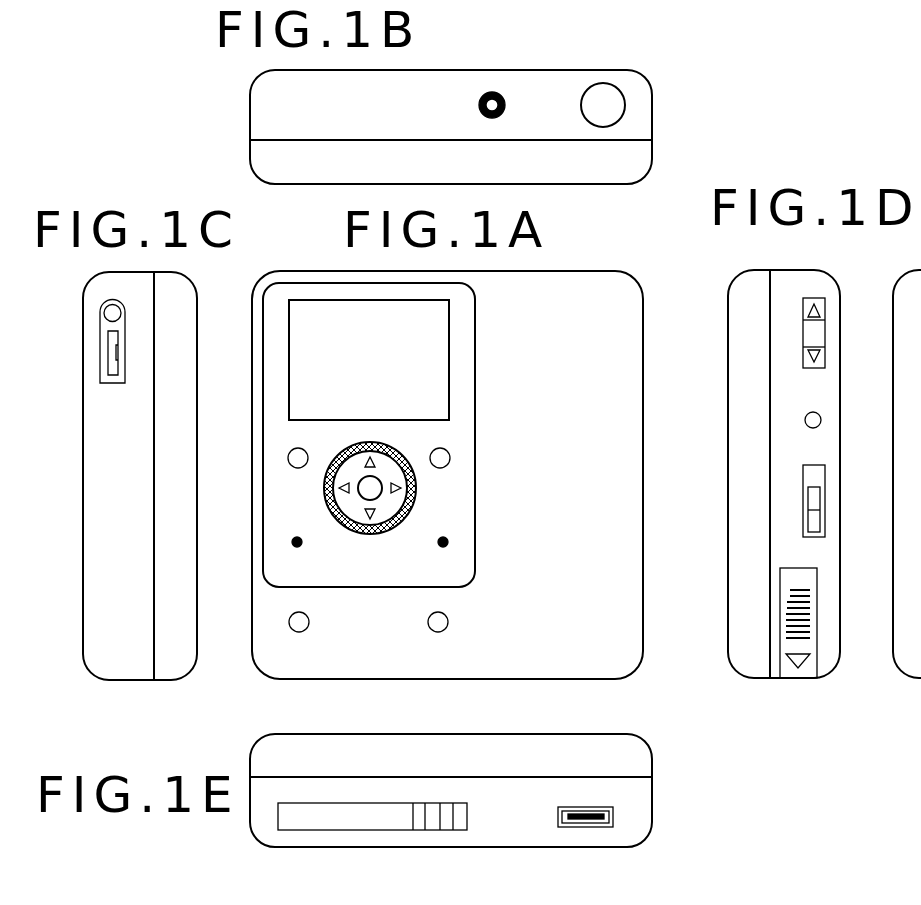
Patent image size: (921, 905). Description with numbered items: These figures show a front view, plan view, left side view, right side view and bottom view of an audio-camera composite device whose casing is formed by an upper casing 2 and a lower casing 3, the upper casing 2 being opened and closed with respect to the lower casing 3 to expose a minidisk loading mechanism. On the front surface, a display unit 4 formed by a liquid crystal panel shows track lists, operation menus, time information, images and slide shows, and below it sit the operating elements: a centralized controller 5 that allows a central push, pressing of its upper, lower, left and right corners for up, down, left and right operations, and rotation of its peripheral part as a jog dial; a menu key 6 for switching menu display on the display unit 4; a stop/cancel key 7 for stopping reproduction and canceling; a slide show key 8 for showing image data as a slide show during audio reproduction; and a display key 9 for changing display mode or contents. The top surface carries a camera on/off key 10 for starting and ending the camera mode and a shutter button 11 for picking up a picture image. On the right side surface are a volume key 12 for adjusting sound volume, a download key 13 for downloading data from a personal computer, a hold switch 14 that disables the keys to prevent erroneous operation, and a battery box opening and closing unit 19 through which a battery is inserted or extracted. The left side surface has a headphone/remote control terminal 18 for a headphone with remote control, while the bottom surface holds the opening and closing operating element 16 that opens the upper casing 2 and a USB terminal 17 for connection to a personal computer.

In FIG. 1B, the upper casing 2 is at (646, 150).
In FIG. 1A, the upper casing 2 is at (630, 655).
In FIG. 1C, the upper casing 2 is at (170, 670).
In FIG. 1D, the upper casing 2 is at (824, 474).
In FIG. 1B, the lower casing 3 is at (648, 103).
In FIG. 1C, the lower casing 3 is at (114, 670).
In FIG. 1E, the lower casing 3 is at (640, 803).
In FIG. 1A, the display unit 4 is at (442, 343).
In FIG. 1A, the centralized controller 5 is at (390, 500).
In FIG. 1A, the menu key 6 is at (441, 455).
In FIG. 1A, the stop/cancel key 7 is at (298, 455).
In FIG. 1A, the slide show key 8 is at (300, 619).
In FIG. 1A, the display key 9 is at (439, 619).
In FIG. 1B, the camera on/off key 10 is at (493, 92).
In FIG. 1B, the shutter button 11 is at (603, 88).
In FIG. 1D, the volume key 12 is at (816, 298).
In FIG. 1D, the download key 13 is at (814, 416).
In FIG. 1D, the hold switch 14 is at (815, 475).
In FIG. 1E, the opening and closing operating element 16 is at (357, 827).
In FIG. 1E, the USB terminal 17 is at (585, 828).
In FIG. 1C, the headphone/remote control terminal 18 is at (100, 333).
In FIG. 1D, the battery box opening and closing unit 19 is at (797, 668).